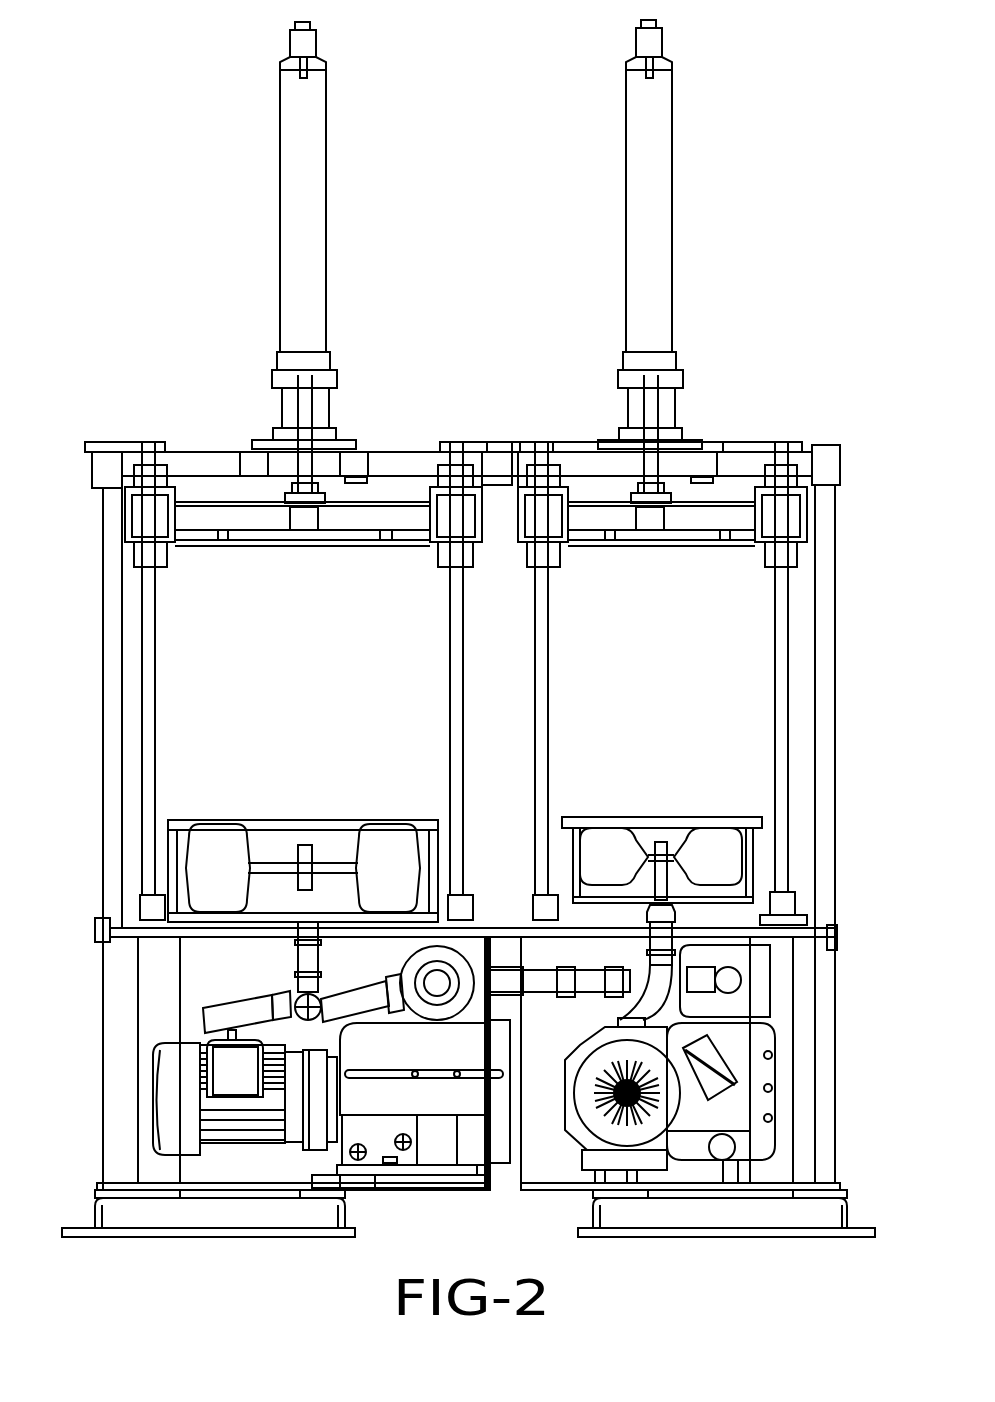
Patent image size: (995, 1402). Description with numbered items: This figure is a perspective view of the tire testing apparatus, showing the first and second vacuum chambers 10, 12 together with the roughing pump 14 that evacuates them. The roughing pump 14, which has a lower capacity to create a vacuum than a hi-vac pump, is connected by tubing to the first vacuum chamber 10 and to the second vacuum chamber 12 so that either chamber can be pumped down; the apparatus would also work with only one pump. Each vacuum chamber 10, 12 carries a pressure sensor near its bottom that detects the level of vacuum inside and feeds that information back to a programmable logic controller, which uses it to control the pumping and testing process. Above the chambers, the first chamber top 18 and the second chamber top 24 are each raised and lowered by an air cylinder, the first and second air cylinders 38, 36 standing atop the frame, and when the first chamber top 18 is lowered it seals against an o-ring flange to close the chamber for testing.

The first vacuum chamber 10 is at (723, 860).
The second vacuum chamber 12 is at (213, 862).
The roughing pump 14 is at (765, 1104).
The first chamber top 18 is at (630, 548).
The first mounting plate 24 is at (285, 548).
The second hydraulic cylinder 36 is at (658, 278).
The first hydraulic cylinder 38 is at (312, 232).